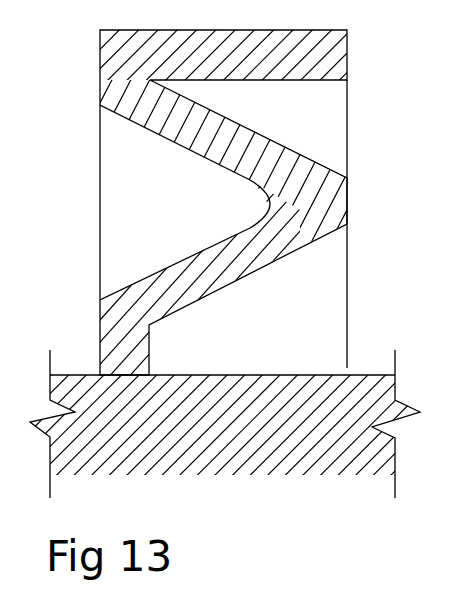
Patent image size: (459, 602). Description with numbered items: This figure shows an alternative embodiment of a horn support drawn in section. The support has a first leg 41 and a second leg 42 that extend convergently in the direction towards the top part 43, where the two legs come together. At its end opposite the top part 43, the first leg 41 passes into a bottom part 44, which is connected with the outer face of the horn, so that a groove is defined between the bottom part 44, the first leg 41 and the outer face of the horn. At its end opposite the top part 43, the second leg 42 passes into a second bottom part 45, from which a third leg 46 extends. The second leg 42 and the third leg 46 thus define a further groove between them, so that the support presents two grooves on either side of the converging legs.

The first leg 41 is at (243, 258).
The second leg 42 is at (260, 137).
The top part 43 is at (327, 205).
The bottom part 44 is at (112, 337).
The second bottom part 45 is at (100, 82).
The third leg 46 is at (327, 53).